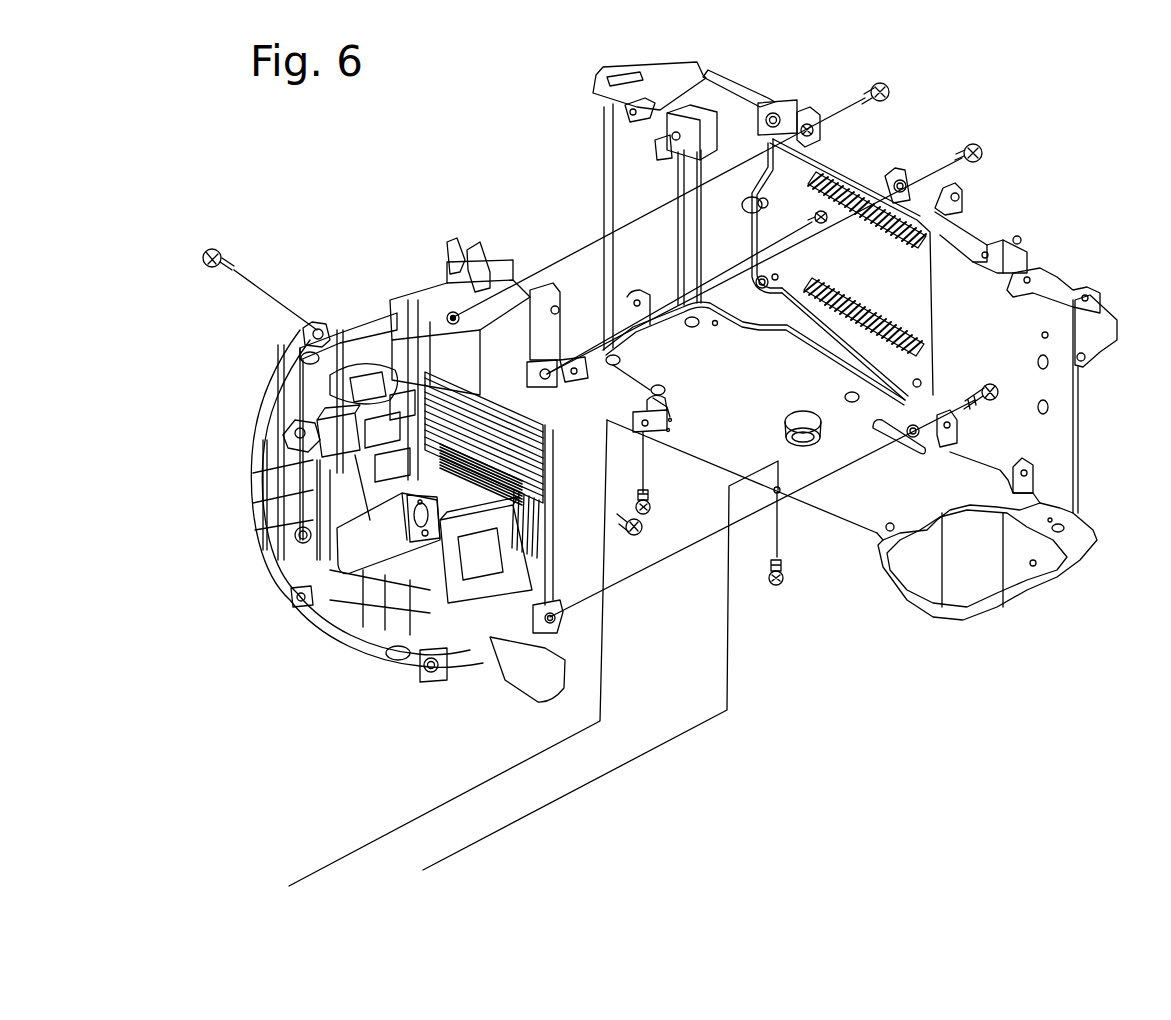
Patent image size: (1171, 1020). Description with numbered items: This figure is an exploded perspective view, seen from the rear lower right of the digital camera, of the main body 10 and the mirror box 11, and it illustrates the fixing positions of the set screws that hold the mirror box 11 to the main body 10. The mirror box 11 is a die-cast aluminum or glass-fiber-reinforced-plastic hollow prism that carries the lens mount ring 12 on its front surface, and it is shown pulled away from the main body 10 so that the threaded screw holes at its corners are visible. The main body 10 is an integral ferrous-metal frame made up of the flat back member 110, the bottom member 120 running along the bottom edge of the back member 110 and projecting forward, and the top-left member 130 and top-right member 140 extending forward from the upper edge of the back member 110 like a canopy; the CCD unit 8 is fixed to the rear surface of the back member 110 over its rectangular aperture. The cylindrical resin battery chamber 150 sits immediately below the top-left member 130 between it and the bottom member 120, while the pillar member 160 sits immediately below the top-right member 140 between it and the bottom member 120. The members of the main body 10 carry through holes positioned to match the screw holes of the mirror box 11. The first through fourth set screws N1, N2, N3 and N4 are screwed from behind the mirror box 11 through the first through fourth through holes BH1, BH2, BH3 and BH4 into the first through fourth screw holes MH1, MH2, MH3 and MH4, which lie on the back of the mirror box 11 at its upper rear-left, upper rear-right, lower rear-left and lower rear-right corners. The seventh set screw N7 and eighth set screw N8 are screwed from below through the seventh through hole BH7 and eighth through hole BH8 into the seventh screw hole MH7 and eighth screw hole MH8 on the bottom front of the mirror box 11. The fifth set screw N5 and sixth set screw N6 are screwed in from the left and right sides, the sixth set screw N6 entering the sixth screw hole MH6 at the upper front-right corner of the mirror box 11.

The CCD unit 8 is at (935, 262).
The main body 10 is at (1073, 481).
The mirror box 11 is at (297, 393).
The lens mount ring 12 is at (262, 463).
The back member 110 is at (1000, 313).
The bottom member 120 is at (870, 515).
The top-left member 130 is at (1077, 300).
The top-right member 140 is at (737, 83).
The battery chamber 150 is at (973, 583).
The pillar member 160 is at (625, 172).
The first screw hole MH1 is at (548, 368).
The second screw hole MH2 is at (455, 318).
The third screw hole MH3 is at (560, 620).
The fourth screw hole MH4 is at (300, 537).
The sixth screw hole MH6 is at (317, 327).
The seventh screw hole MH7 is at (423, 870).
The eighth screw hole MH8 is at (289, 886).
The first through hole BH1 is at (898, 172).
The second through hole BH2 is at (802, 115).
The third through hole BH3 is at (905, 445).
The fourth through hole BH4 is at (742, 252).
The seventh through hole BH7 is at (779, 493).
The eighth through hole BH8 is at (647, 430).
The first set screw N1 is at (982, 151).
The second set screw N2 is at (889, 92).
The third set screw N3 is at (981, 388).
The fourth set screw N4 is at (805, 210).
The fifth set screw N5 is at (628, 537).
The sixth set screw N6 is at (222, 247).
The seventh set screw N7 is at (783, 582).
The eighth set screw N8 is at (650, 503).